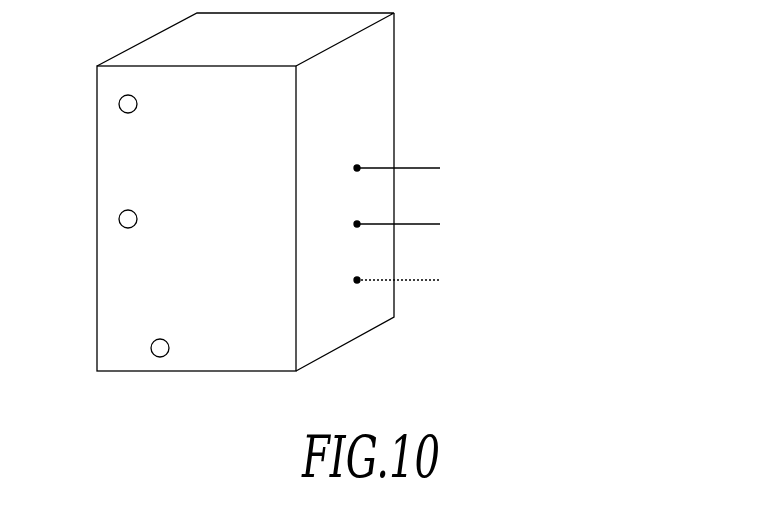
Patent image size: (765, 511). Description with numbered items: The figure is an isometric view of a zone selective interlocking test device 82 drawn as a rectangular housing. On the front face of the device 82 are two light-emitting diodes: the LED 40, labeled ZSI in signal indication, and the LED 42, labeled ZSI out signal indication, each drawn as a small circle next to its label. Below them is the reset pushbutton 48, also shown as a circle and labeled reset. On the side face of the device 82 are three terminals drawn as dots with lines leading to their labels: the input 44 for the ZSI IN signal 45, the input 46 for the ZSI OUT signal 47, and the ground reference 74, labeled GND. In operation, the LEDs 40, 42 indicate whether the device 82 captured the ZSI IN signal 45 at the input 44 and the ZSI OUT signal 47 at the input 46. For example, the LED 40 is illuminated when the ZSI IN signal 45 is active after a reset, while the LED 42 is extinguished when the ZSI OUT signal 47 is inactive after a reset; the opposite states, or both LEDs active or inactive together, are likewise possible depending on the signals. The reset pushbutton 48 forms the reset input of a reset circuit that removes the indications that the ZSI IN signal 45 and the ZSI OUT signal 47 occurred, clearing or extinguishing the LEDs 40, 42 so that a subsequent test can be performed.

The device 82 is at (479, 80).
The LED 40 is at (119, 104).
The LED 42 is at (119, 219).
The input 44 is at (354, 167).
The ZSI IN signal 45 is at (585, 164).
The input 46 is at (354, 223).
The ZSI OUT signal 47 is at (605, 218).
The reset pushbutton 48 is at (158, 357).
The ground reference 74 is at (354, 279).